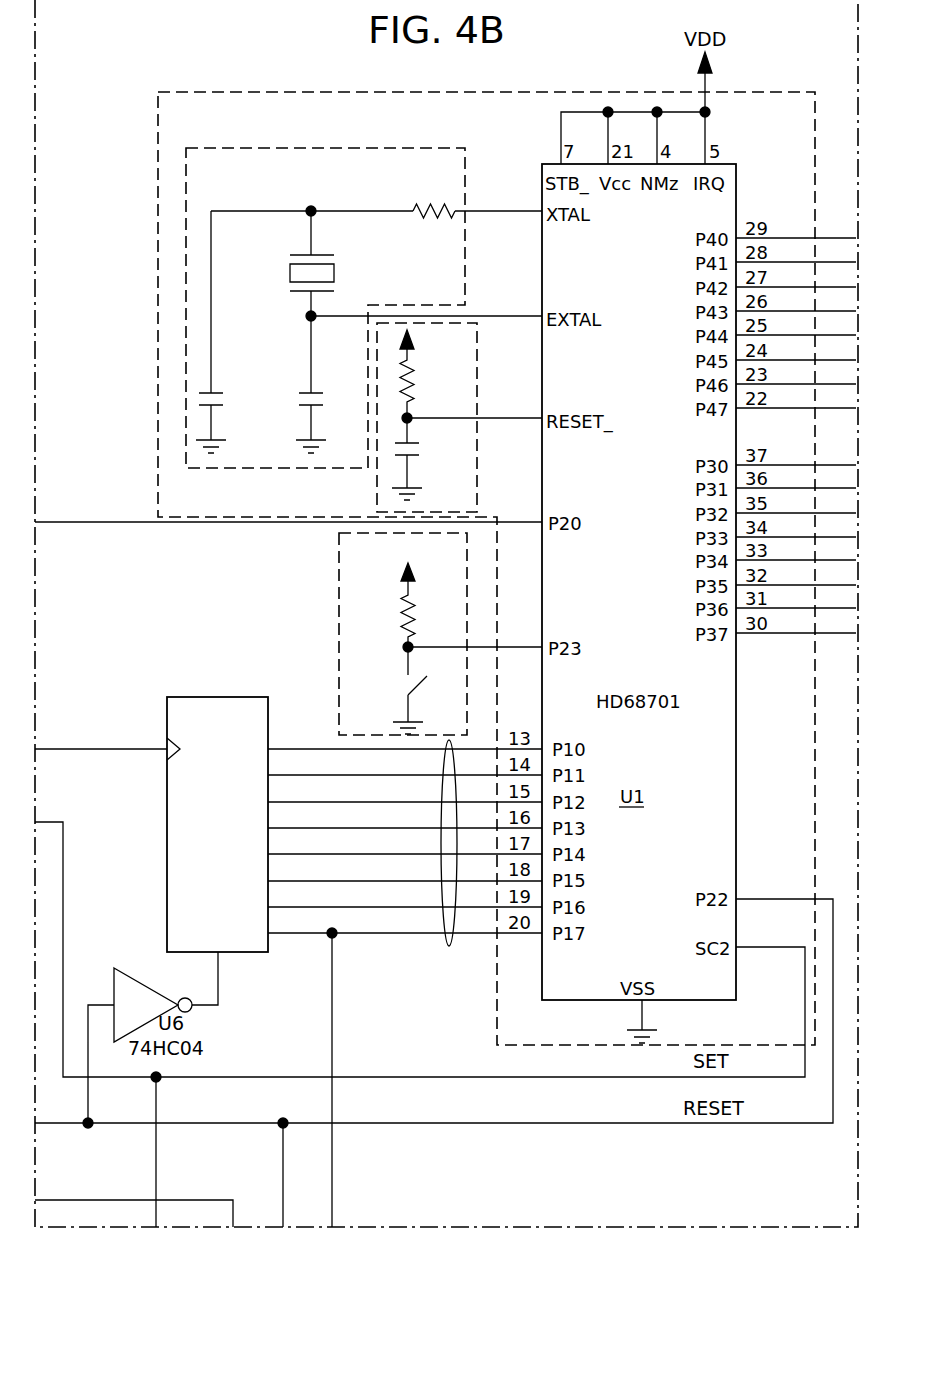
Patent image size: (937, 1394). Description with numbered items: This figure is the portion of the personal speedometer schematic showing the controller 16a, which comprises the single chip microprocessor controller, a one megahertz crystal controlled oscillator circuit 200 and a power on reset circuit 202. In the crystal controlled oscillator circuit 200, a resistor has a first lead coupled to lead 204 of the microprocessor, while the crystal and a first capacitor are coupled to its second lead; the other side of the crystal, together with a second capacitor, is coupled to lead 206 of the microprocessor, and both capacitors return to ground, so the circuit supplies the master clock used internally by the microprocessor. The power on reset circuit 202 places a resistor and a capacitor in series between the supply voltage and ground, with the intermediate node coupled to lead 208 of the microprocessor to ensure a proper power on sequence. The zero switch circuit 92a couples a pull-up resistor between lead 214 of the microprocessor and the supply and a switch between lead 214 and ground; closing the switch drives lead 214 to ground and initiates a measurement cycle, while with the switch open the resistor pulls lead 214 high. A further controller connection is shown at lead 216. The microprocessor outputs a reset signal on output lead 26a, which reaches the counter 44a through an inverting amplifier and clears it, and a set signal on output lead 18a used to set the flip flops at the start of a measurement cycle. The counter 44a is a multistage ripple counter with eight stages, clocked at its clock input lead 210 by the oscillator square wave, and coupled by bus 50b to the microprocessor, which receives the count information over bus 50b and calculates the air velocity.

The controller 16a is at (197, 91).
The crystal controlled oscillator circuit 200 is at (186, 218).
The power on reset circuit 202 is at (377, 474).
The zero switch circuit 92a is at (339, 543).
The lead 204 is at (498, 199).
The lead 206 is at (426, 304).
The lead 208 is at (474, 406).
The P20 line 216 is at (288, 509).
The lead 214 is at (475, 634).
The clock input lead 210 is at (101, 763).
The counter 44a is at (167, 808).
The bus 50b is at (449, 947).
The output lead 26a is at (434, 999).
The output lead 18a is at (420, 949).